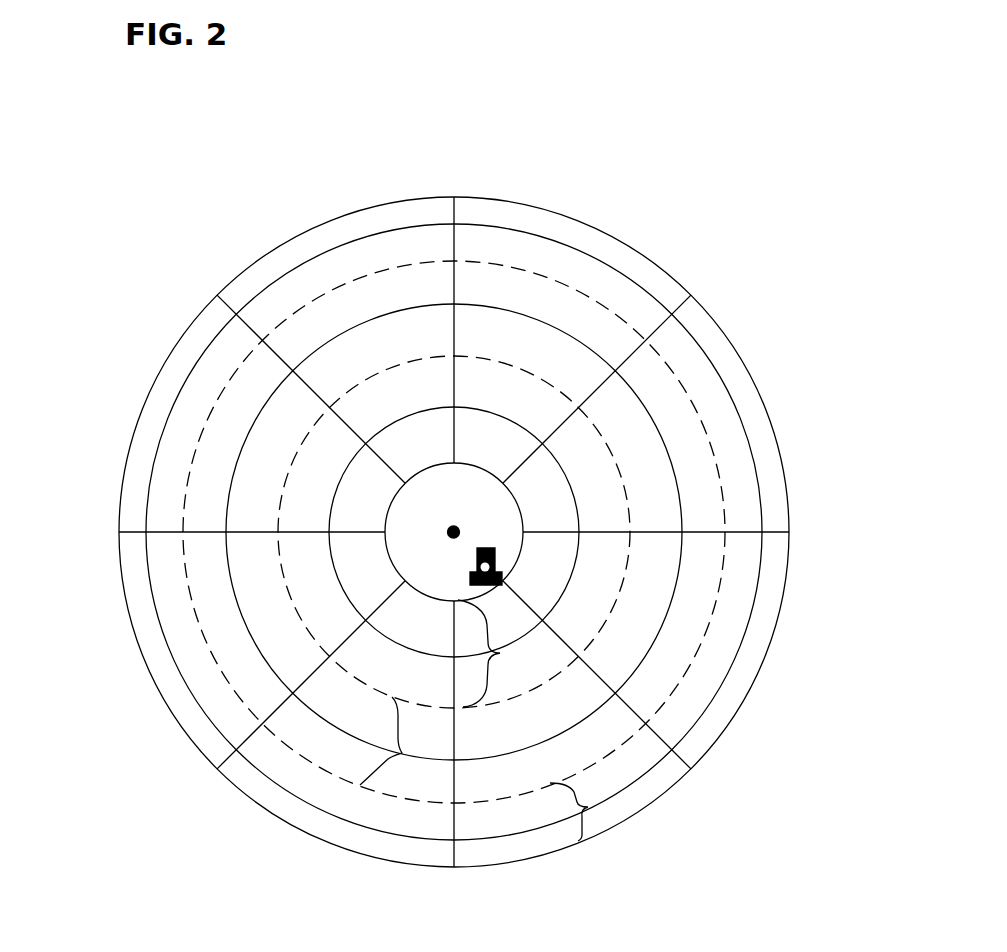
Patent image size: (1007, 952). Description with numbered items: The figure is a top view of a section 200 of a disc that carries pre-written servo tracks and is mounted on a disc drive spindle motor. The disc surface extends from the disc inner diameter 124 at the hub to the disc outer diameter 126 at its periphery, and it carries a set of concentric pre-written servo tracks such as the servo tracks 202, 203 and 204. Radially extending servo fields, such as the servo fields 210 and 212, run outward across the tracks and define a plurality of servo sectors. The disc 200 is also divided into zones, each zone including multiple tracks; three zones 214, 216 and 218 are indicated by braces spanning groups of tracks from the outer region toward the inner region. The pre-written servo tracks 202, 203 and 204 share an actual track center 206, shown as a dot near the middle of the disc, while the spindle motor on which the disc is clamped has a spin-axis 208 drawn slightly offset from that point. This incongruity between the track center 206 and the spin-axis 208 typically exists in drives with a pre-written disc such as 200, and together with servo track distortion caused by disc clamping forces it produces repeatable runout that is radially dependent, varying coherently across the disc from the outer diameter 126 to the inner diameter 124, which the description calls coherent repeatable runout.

The section of a disc 200 is at (648, 150).
The disc outer diameter 126 is at (118, 500).
The disc inner diameter 124 is at (387, 512).
The pre-written servo track 202 is at (182, 678).
The pre-written servo track 203 is at (228, 584).
The pre-written servo track 204 is at (337, 575).
The track center 206 is at (457, 527).
The spin-axis 208 is at (475, 562).
The servo field 210 is at (688, 298).
The servo field 212 is at (778, 532).
The zone 214 is at (588, 807).
The zone 216 is at (402, 753).
The zone 218 is at (500, 653).